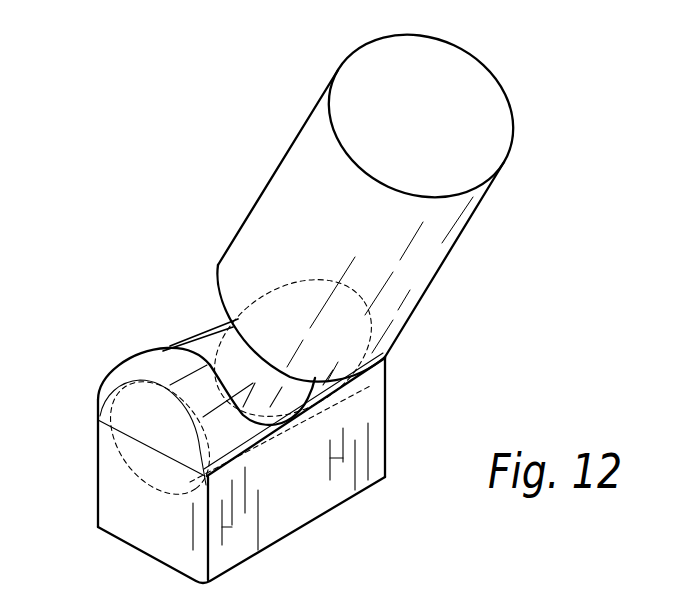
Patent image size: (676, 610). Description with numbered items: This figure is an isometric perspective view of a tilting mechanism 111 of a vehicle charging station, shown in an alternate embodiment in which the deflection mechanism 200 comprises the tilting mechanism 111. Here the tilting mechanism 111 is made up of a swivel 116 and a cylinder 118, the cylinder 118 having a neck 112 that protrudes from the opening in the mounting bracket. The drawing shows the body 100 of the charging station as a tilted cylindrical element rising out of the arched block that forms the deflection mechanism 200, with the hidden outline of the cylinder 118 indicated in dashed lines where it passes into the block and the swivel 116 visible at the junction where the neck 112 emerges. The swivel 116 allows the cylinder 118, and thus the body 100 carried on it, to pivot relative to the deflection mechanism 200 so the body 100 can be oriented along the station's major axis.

The body 100 is at (433, 247).
The deflection mechanism 200 is at (100, 341).
The tilting mechanism 111 is at (315, 407).
The neck 112 is at (228, 352).
The swivel 116 is at (257, 403).
The cylinder 118 is at (153, 463).